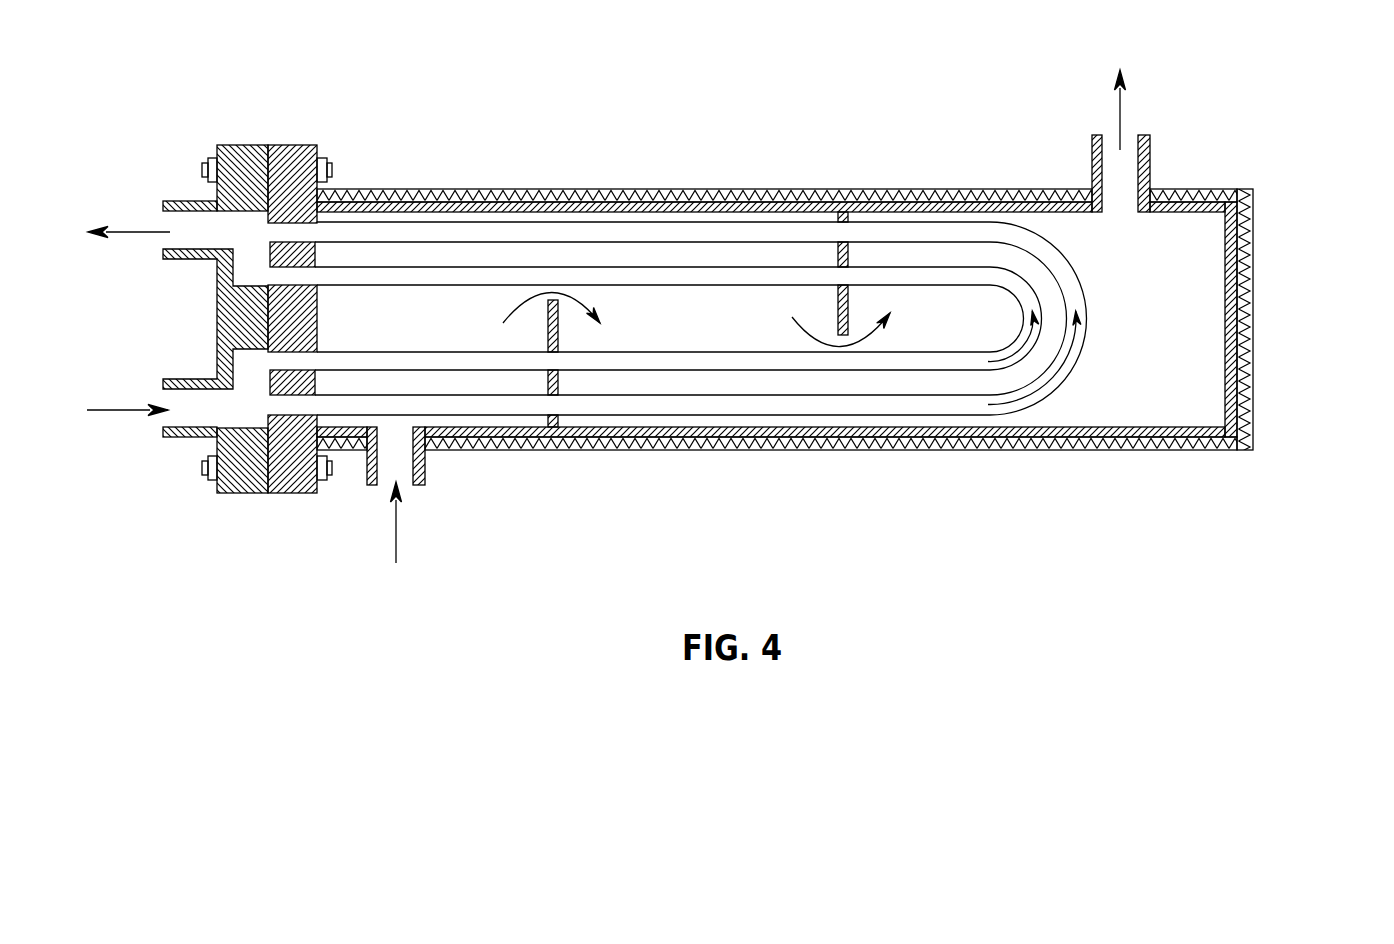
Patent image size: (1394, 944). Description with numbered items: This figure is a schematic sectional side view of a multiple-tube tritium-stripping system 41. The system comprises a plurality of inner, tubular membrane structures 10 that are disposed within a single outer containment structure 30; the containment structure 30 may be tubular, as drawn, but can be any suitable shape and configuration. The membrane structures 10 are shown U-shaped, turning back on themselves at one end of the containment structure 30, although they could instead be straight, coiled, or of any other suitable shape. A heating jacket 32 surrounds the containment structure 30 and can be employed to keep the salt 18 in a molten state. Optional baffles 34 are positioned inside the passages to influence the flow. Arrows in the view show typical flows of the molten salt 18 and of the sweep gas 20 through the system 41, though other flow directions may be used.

The tubular membrane structure 10 is at (783, 243).
The salt 18 is at (220, 228).
The sweep gas 20 is at (733, 335).
The outer containment structure 30 is at (613, 188).
The heating jacket 32 is at (429, 188).
The baffle 34 is at (848, 292).
The multiple-tube tritium-stripping system 41 is at (1283, 188).